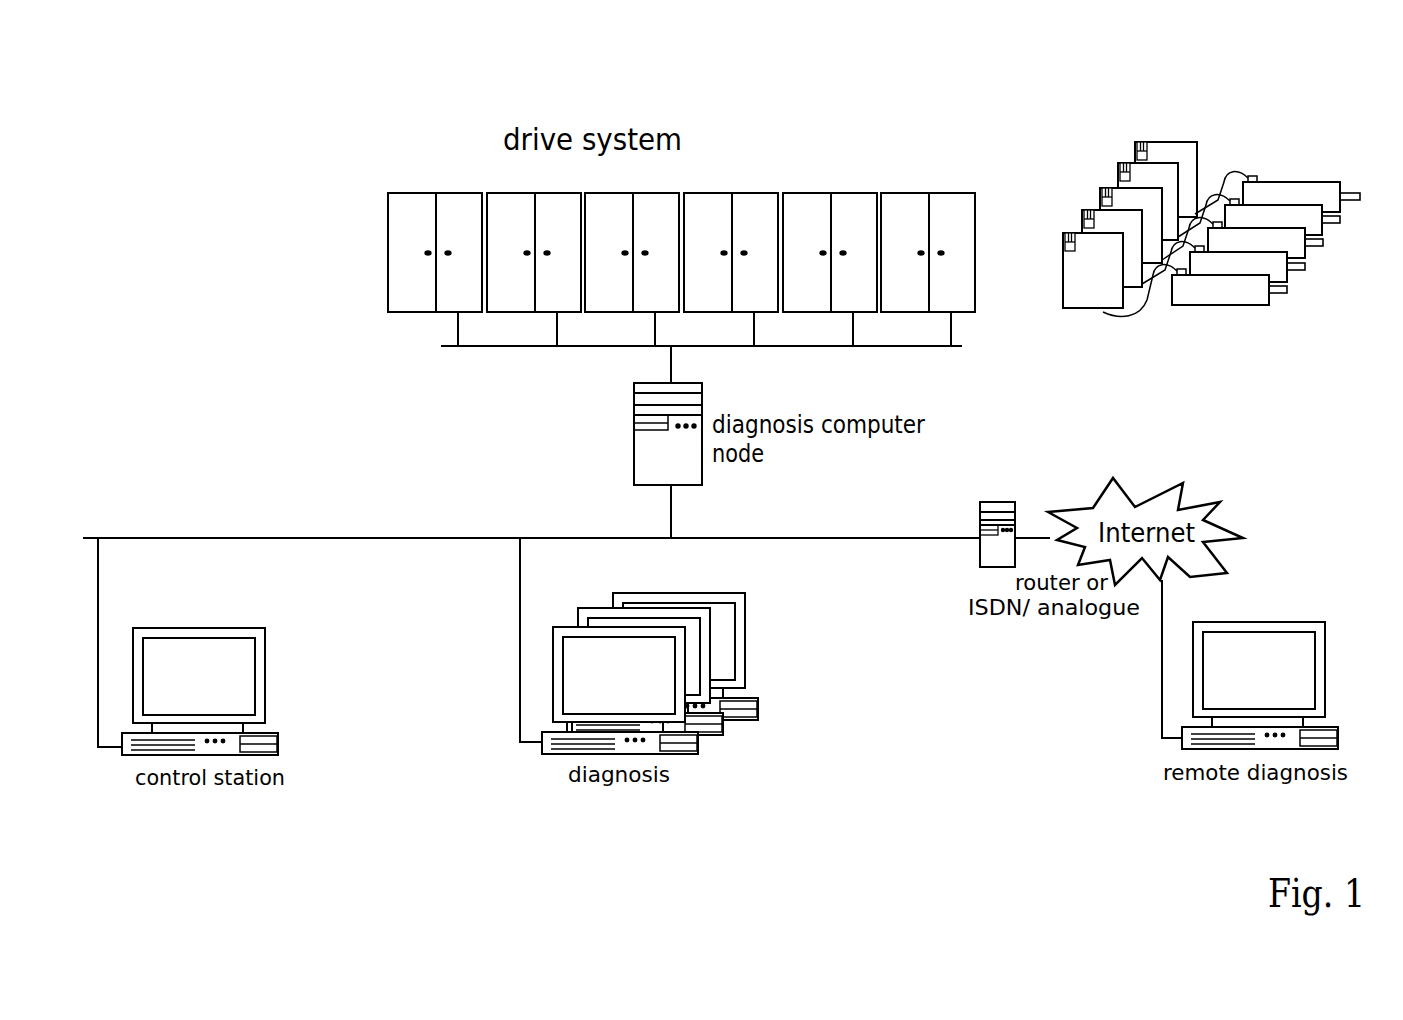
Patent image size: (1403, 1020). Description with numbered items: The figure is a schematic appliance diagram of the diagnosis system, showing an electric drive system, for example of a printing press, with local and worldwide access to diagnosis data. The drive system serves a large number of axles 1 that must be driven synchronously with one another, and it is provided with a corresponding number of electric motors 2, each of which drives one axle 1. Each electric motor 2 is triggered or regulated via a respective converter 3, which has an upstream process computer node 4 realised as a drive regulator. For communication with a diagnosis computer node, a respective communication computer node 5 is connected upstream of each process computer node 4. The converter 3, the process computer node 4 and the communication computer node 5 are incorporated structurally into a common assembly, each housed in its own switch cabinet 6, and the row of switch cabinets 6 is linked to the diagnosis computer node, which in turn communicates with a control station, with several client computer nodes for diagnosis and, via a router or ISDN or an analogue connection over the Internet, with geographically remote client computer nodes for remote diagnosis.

The axle 1 is at (1348, 202).
The electric motor 2 is at (1282, 188).
The converter 3 is at (1188, 155).
The process computer node 4 is at (1124, 165).
The communication computer node 5 is at (1140, 143).
The switch cabinet 6 is at (810, 191).